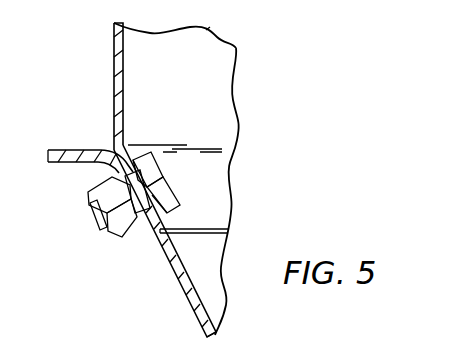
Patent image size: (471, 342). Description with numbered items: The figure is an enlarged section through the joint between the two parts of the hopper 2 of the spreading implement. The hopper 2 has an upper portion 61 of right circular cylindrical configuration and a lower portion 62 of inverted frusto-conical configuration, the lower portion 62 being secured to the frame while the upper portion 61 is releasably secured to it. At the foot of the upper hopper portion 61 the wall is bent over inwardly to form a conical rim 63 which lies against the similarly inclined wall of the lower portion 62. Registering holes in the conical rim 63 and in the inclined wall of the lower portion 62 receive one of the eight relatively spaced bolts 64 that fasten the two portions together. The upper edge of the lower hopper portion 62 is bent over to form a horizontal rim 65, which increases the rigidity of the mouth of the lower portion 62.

The hopper 2 is at (207, 29).
The upper portion 61 is at (215, 74).
The lower portion 62 is at (175, 276).
The inwardly bent-over conical rim 63 is at (208, 211).
The bolts 64 is at (95, 192).
The horizontal rim 65 is at (66, 131).